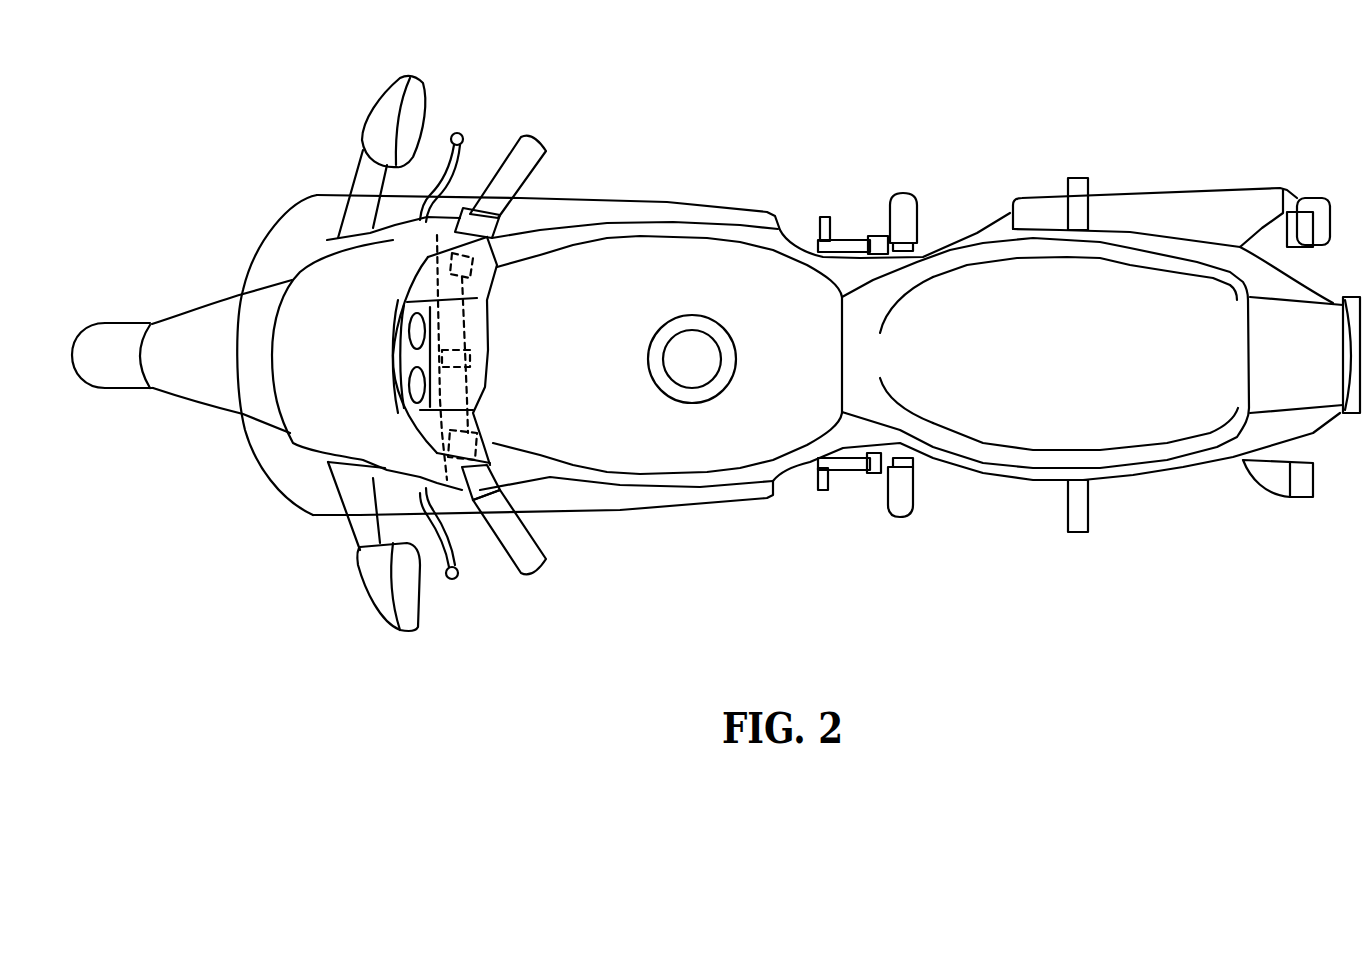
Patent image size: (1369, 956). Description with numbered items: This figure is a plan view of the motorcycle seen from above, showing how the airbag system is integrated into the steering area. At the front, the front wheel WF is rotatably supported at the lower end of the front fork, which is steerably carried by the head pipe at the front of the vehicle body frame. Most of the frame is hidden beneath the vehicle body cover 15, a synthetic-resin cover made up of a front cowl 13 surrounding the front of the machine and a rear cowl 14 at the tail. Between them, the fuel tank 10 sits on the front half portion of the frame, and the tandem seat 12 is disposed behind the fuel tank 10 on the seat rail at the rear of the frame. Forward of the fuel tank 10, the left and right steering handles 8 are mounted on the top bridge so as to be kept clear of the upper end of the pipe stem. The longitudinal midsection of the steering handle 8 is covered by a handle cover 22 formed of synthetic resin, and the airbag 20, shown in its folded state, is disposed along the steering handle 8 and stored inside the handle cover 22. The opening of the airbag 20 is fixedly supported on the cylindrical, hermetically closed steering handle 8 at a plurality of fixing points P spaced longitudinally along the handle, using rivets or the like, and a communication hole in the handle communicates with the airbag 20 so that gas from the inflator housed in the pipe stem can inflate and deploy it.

The steering handle 8 is at (513, 167).
The fuel tank 10 is at (623, 447).
The tandem seat 12 is at (985, 413).
The front cowl 13 is at (277, 461).
The rear cowl 14 is at (1183, 460).
The vehicle body cover 15 is at (667, 190).
The airbag 20 is at (495, 448).
The handle cover 22 is at (487, 337).
The fixing points P is at (433, 255).
The front wheel WF is at (118, 343).